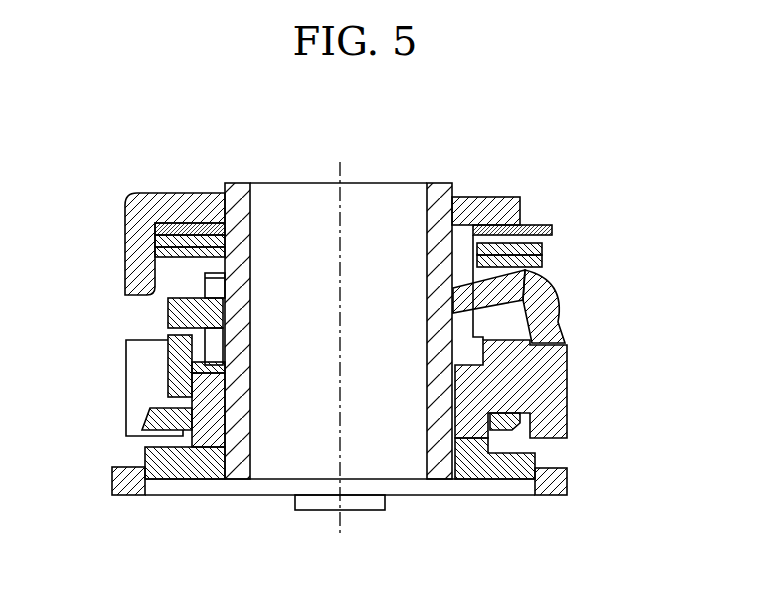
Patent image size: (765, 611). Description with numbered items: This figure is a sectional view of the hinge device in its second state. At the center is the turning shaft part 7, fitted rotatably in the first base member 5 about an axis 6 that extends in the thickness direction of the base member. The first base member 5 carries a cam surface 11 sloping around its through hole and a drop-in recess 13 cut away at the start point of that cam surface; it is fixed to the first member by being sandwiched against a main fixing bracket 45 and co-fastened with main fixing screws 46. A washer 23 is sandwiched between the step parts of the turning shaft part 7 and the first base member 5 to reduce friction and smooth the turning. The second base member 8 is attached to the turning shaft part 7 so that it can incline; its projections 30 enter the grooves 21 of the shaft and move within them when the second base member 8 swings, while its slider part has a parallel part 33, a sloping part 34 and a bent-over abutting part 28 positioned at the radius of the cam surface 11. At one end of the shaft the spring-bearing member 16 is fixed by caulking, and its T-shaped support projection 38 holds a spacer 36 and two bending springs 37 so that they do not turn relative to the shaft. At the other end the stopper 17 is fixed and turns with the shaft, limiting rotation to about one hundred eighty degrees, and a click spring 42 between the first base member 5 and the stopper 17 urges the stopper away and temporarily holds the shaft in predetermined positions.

The first base member 5 is at (567, 415).
The axis 6 is at (340, 210).
The turning shaft part 7 is at (438, 183).
The second base member 8 is at (591, 309).
The parallel part 33 is at (560, 325).
The cam surface 11 is at (493, 306).
The drop-in recess 13 is at (170, 382).
The spring-bearing member 16 is at (492, 197).
The stopper 17 is at (498, 479).
The grooves 21 is at (125, 245).
The washer 23 is at (170, 346).
The abutting part 28 is at (541, 298).
The projections 30 is at (212, 288).
The sloping part 34 is at (167, 320).
The spacer 36 is at (552, 230).
The bending springs 37 is at (542, 255).
The support projection 38 is at (126, 283).
The click spring 42 is at (530, 438).
The main fixing bracket 45 is at (567, 483).
The main fixing screws 46 is at (357, 510).